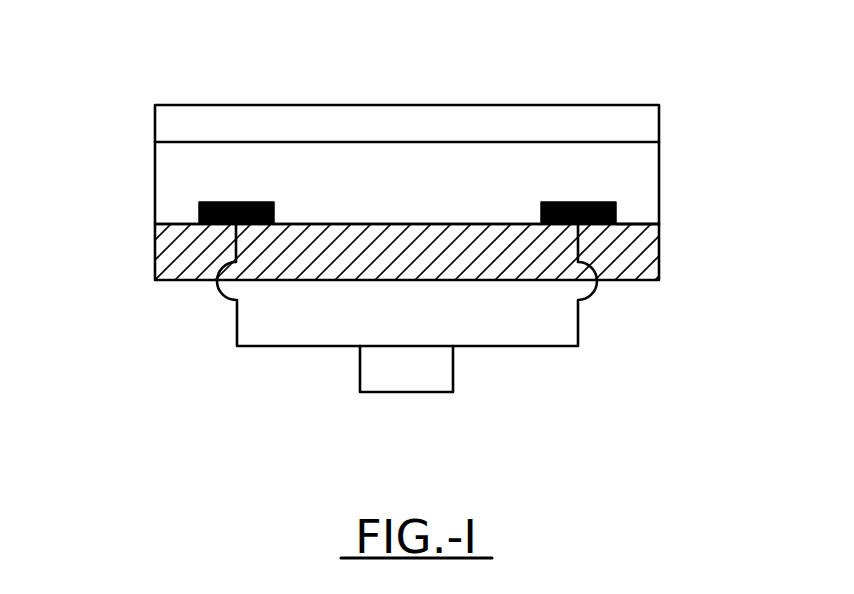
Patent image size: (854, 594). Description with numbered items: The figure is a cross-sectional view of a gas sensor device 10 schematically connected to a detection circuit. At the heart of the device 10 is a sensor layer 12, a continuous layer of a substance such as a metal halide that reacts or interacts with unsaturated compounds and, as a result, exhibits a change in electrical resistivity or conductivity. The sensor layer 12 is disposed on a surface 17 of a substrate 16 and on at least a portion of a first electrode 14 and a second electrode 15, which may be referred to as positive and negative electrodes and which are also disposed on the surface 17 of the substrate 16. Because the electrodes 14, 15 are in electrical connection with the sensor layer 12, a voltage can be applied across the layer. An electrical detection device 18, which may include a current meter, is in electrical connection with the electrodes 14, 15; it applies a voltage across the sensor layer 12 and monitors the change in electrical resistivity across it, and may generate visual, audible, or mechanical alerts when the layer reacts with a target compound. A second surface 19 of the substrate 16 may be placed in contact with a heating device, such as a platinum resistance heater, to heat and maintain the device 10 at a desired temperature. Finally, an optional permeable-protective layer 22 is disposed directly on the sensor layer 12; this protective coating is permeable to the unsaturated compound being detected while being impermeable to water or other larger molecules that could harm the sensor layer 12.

The gas sensor device 10 is at (650, 87).
The sensor layer 12 is at (200, 170).
The first electrode 14 is at (198, 212).
The second electrode 15 is at (578, 202).
The substrate 16 is at (655, 246).
The surface of substrate 17 is at (638, 223).
The electrical detection device 18 is at (454, 366).
The second surface of substrate 19 is at (623, 282).
The permeable-protective layer 22 is at (305, 118).